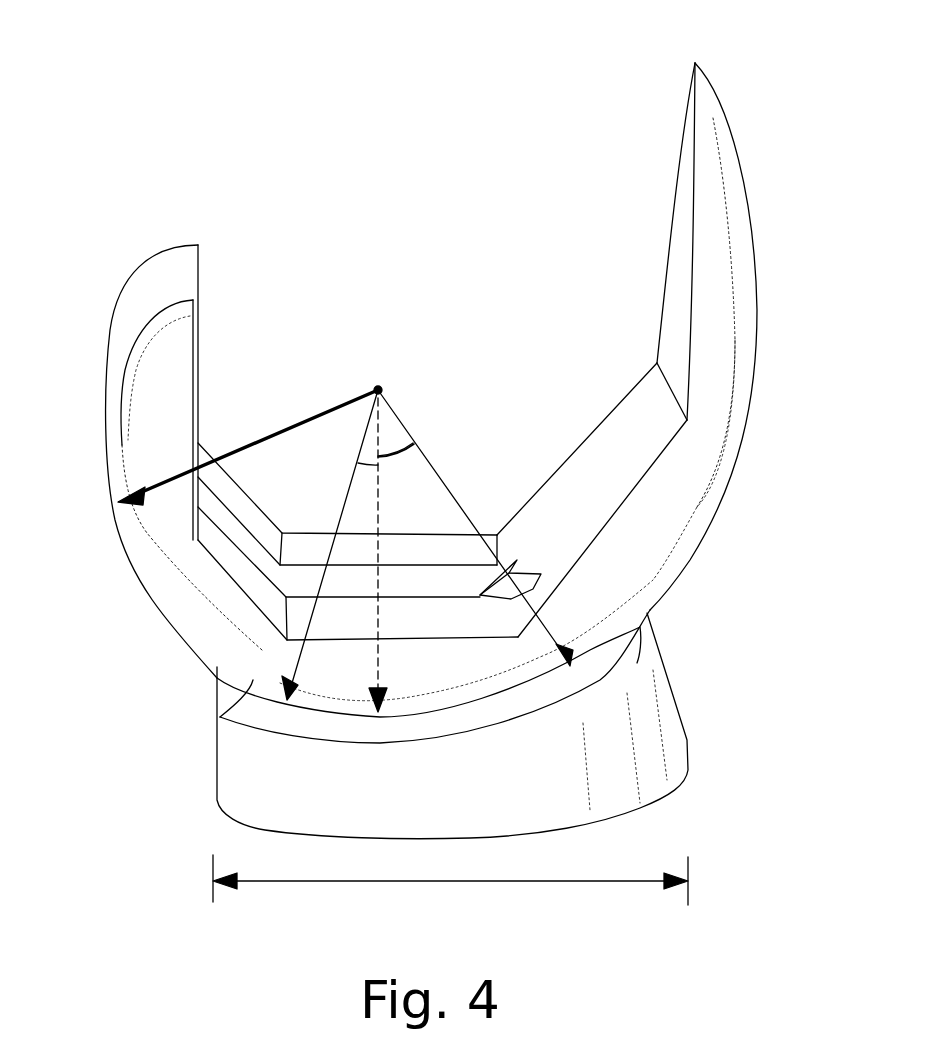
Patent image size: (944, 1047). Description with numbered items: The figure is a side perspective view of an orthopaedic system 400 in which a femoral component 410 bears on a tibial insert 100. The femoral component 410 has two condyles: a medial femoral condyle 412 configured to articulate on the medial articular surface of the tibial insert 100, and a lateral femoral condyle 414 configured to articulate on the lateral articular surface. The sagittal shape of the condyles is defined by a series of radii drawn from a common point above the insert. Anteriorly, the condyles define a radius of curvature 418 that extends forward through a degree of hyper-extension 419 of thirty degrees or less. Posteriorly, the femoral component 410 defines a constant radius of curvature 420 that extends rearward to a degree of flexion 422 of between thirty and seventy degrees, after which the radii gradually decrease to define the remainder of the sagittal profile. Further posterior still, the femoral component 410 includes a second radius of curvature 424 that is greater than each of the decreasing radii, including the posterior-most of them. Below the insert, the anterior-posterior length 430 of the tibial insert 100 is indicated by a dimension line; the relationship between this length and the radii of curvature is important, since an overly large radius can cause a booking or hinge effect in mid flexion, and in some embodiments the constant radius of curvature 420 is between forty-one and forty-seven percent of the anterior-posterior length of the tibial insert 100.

The orthopaedic system 400 is at (345, 158).
The femoral component 410 is at (790, 228).
The lateral femoral condyle 414 is at (123, 319).
The medial femoral condyle 412 is at (166, 616).
The tibial insert 100 is at (715, 682).
The second radius of curvature 424 is at (245, 453).
The radius of curvature 418 is at (430, 459).
The degree of hyper-extension 419 is at (400, 456).
The constant radius of curvature 420 is at (358, 462).
The degree of flexion 422 is at (365, 468).
The anterior-posterior length 430 is at (440, 884).